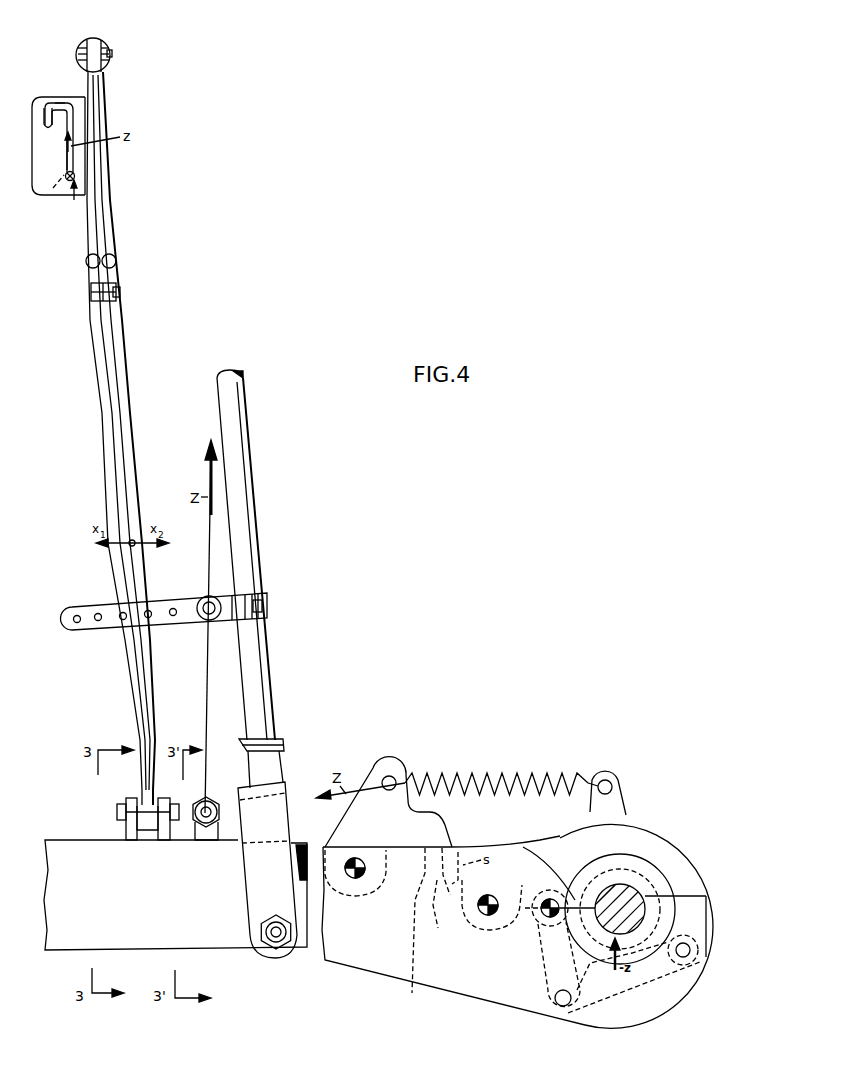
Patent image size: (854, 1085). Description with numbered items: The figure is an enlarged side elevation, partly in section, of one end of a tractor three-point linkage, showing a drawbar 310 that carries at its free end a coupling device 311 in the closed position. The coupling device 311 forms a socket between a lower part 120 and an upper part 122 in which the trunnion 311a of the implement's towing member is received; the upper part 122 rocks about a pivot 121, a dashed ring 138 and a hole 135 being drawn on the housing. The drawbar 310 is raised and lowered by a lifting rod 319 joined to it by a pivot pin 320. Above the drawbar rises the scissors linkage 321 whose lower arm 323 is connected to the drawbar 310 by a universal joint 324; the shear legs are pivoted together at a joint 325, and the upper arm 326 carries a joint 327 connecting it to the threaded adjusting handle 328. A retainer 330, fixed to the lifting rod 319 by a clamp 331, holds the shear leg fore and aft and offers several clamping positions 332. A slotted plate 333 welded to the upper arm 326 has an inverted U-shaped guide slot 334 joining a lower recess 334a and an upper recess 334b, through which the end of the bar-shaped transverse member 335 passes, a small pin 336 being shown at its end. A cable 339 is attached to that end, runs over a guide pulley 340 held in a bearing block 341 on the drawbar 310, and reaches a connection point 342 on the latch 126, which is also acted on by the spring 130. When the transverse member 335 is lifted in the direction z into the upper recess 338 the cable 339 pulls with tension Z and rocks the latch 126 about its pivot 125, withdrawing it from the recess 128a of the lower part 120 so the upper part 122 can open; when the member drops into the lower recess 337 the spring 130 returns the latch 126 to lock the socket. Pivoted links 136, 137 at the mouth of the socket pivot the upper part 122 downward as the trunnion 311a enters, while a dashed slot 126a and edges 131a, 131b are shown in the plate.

The lower part 120 is at (653, 1006).
The pivot 121 is at (488, 895).
The upper part 122 is at (657, 843).
The pivot 125 is at (362, 877).
The latch 126 is at (345, 821).
The slot 126a is at (438, 870).
The recess 128a is at (445, 910).
The spring 130 is at (497, 778).
The pin 131a is at (473, 920).
The boss 131b is at (487, 848).
The bolt hole 135 is at (684, 958).
The pivoted link 136 is at (612, 1003).
The pivoted link 137 is at (548, 962).
The ring 138 is at (656, 880).
The drawbar 310 is at (70, 846).
The coupling device 311 is at (457, 998).
The trunnion 311a is at (601, 895).
The lifting rod 319 is at (228, 413).
The pivot pin 320 is at (275, 950).
The scissors linkage 321 is at (92, 323).
The lower arm 323 is at (100, 378).
The universal joint 324 is at (152, 842).
The joint 325 is at (120, 291).
The upper arm 326 is at (88, 255).
The joint 327 is at (112, 53).
The adjusting handle 328 is at (93, 38).
The retainer 330 is at (88, 608).
The clamp 331 is at (233, 620).
The clamping position 332 is at (122, 620).
The slotted plate 333 is at (80, 108).
The guide slot 334 is at (71, 125).
The lower recess 334a is at (72, 162).
The upper recess 334b is at (58, 108).
The transverse member 335 is at (50, 191).
The pin 336 is at (65, 183).
The lower recess 337 is at (76, 199).
The upper recess 338 is at (45, 113).
The cable 339 is at (205, 686).
The guide pulley 340 is at (209, 800).
The bearing block 341 is at (205, 841).
The connection point 342 is at (390, 775).